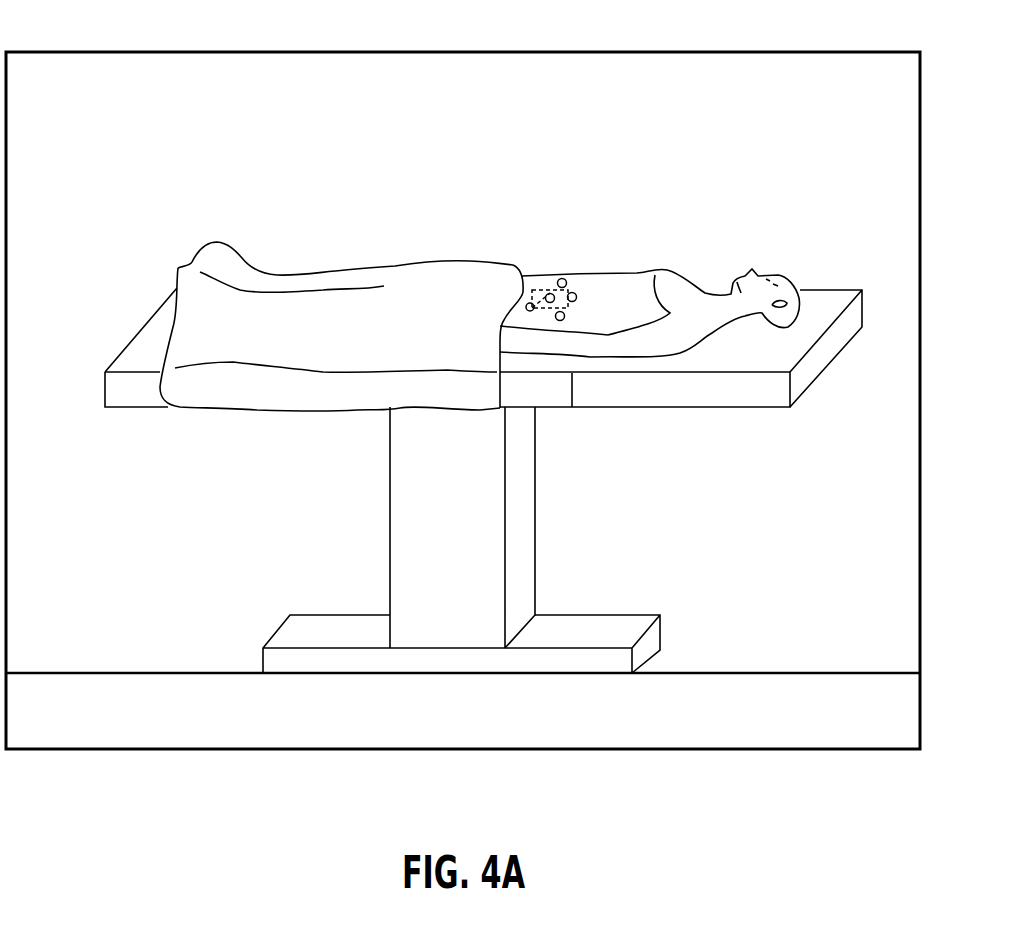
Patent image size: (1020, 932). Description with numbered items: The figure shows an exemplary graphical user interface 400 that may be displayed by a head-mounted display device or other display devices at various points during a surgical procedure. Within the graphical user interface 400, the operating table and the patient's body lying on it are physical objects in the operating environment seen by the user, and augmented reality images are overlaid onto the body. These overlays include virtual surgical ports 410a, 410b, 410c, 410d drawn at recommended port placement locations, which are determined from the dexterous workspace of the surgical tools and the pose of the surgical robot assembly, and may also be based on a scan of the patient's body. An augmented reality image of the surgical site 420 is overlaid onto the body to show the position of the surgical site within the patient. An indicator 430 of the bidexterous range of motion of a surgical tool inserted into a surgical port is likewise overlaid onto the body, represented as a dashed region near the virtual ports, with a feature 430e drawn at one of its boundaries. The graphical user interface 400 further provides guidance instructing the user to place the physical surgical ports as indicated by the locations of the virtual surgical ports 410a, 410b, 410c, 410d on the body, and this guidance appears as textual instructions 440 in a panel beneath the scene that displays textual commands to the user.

The graphical user interface 400 is at (748, 52).
The virtual surgical port 410a is at (562, 278).
The virtual surgical port 410b is at (573, 292).
The virtual surgical port 410c is at (550, 293).
The virtual surgical port 410d is at (562, 320).
The surgical site 420 is at (527, 295).
The indicator of a bidexterous range of motion 430 is at (528, 324).
The port placement region edge 430e is at (530, 306).
The textual instructions 440 is at (753, 673).